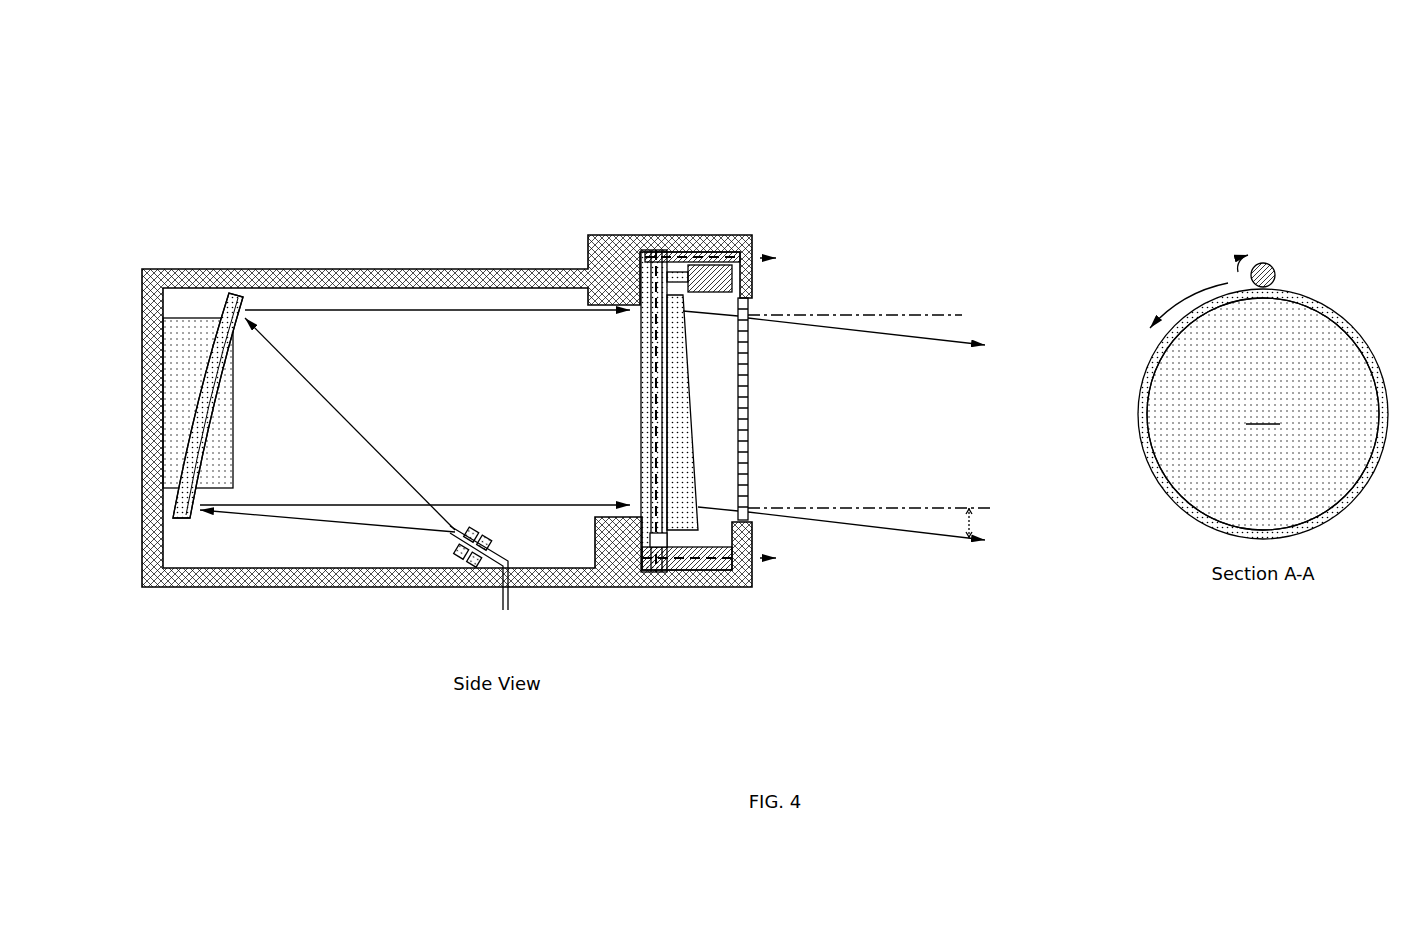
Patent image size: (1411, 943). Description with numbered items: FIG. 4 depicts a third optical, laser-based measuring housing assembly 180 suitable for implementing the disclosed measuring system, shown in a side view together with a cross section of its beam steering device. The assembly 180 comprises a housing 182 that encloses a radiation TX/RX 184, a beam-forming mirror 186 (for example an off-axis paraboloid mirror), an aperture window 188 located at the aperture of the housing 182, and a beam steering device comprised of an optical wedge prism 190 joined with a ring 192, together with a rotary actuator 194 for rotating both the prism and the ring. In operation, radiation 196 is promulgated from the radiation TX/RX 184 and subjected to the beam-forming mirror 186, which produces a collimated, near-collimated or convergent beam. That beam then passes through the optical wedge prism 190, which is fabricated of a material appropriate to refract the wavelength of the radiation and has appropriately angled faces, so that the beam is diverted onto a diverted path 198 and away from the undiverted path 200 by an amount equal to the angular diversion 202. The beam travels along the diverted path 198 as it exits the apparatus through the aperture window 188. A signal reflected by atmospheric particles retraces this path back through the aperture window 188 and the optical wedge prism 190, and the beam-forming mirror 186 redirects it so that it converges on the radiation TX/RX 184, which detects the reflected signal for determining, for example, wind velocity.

The housing assembly 180 is at (305, 78).
The housing 182 is at (306, 267).
The radiation TX/RX 184 is at (440, 552).
The beam-forming mirror 186 is at (214, 395).
The aperture window 188 is at (753, 370).
The optical wedge prism 190 is at (700, 437).
The ring 192 is at (672, 480).
The rotary actuator 194 is at (748, 278).
The radiation 196 is at (307, 363).
The diverted path 198 is at (937, 336).
The undiverted path 200 is at (835, 312).
The angular diversion 202 is at (920, 552).